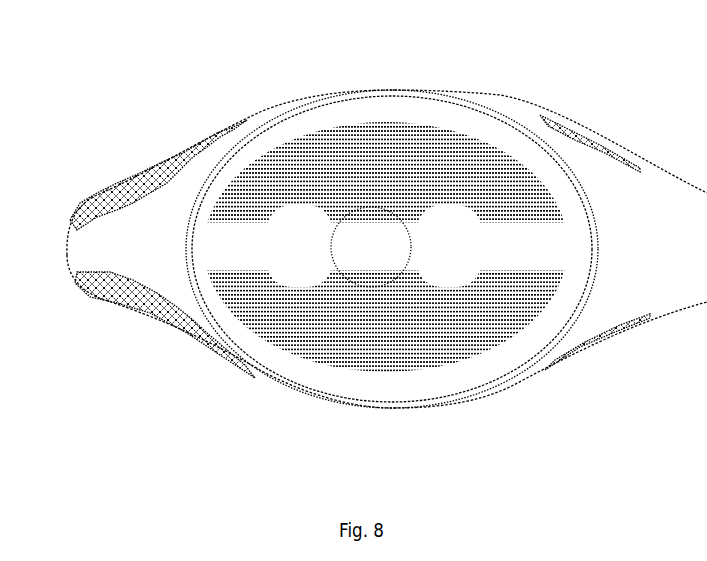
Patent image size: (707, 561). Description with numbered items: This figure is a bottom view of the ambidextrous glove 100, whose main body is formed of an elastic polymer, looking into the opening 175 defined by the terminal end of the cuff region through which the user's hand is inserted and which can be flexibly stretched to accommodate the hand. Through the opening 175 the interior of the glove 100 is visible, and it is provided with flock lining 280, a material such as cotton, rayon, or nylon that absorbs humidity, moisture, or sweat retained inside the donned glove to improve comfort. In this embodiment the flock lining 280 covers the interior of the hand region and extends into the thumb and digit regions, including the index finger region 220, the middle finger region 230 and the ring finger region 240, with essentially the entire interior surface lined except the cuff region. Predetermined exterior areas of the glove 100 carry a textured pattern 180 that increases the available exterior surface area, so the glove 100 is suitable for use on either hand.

The glove 100 is at (128, 87).
The opening 175 is at (277, 352).
The textured pattern 180 is at (125, 288).
The index finger region 220 is at (530, 217).
The middle finger region 230 is at (357, 227).
The ring finger region 240 is at (253, 247).
The flock lining 280 is at (457, 333).